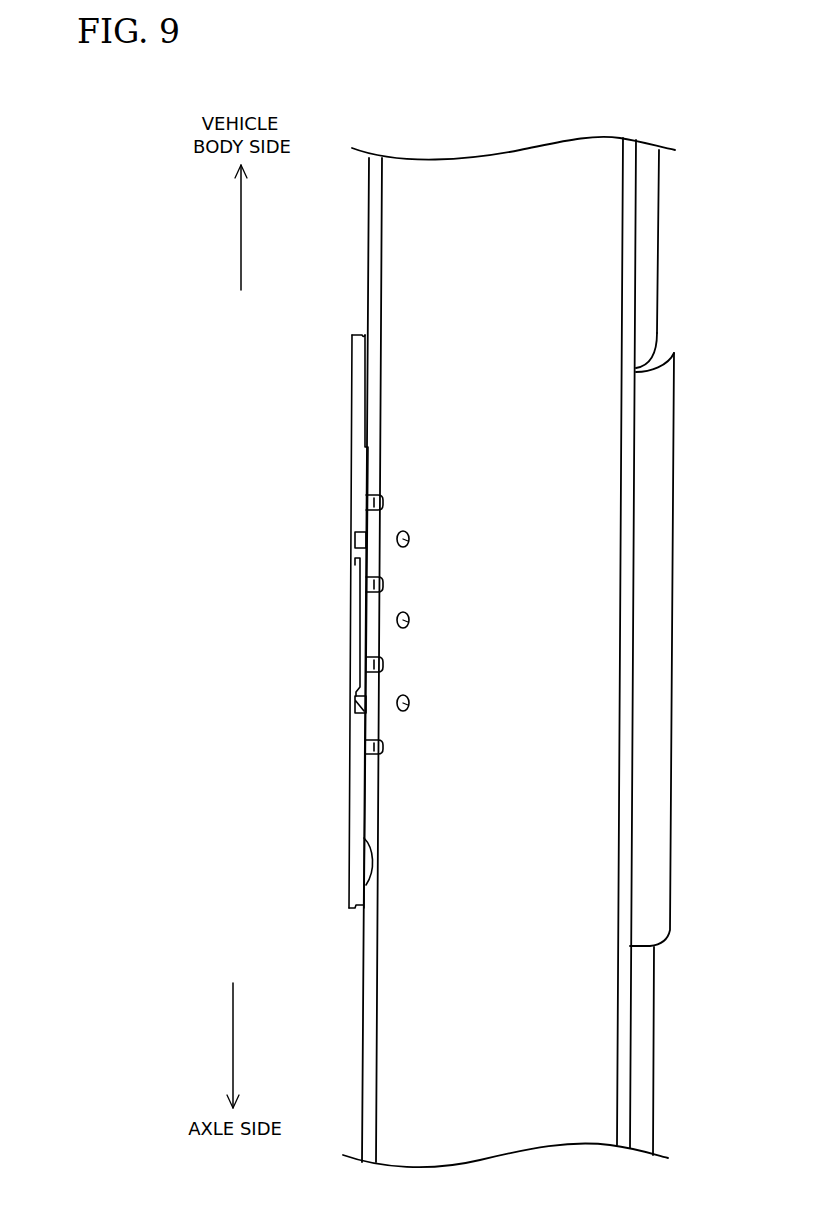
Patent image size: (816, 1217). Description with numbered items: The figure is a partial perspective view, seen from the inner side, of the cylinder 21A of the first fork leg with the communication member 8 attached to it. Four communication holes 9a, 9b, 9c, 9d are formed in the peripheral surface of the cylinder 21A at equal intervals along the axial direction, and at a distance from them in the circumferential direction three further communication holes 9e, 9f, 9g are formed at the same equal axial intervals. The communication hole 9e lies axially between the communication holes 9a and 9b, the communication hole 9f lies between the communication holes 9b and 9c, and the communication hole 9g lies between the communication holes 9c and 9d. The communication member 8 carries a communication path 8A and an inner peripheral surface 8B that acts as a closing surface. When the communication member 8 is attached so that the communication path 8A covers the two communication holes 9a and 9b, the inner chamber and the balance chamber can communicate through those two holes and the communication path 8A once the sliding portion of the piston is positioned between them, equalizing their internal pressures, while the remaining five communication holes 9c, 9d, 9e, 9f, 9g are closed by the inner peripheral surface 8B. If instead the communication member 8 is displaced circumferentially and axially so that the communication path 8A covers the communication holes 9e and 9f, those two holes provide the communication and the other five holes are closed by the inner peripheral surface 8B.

The cylinder 21A is at (366, 198).
The communication member 8 is at (349, 433).
The communication path 8A is at (362, 628).
The inner peripheral surface 8B is at (368, 878).
The communication hole 9a is at (367, 506).
The communication hole 9b is at (367, 585).
The communication hole 9c is at (367, 669).
The communication hole 9d is at (367, 748).
The communication hole 9e is at (410, 543).
The communication hole 9f is at (410, 623).
The communication hole 9g is at (410, 705).